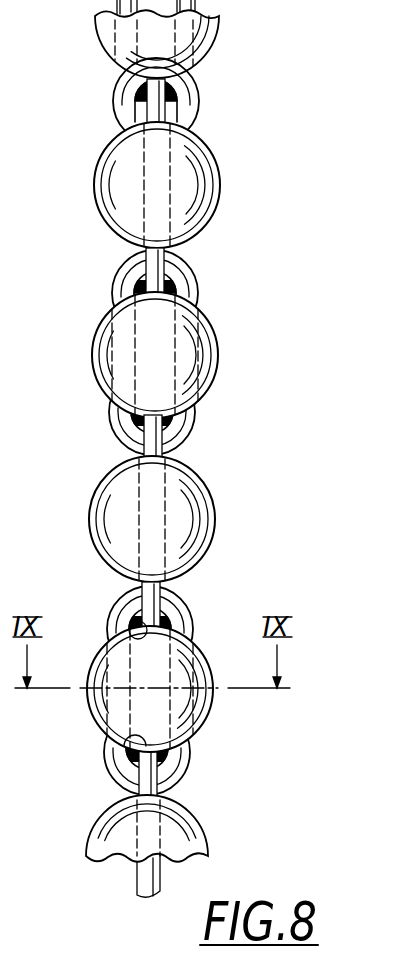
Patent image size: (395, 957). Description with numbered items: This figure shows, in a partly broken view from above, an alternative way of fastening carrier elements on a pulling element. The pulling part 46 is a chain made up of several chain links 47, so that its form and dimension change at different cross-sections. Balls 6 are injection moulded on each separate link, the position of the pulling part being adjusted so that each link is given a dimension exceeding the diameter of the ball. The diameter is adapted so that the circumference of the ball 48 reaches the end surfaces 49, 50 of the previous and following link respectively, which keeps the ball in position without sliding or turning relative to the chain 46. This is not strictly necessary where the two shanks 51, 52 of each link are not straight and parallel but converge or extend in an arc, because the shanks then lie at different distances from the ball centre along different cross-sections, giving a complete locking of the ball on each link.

The ball 6 is at (203, 490).
The pulling part 46 is at (138, 876).
The chain link 47 is at (190, 612).
The circumference of the ball 48 is at (203, 727).
The end surface of the previous link 49 is at (123, 743).
The end surface of the following link 50 is at (130, 627).
The first shank of the link 51 is at (110, 712).
The second shank of the link 52 is at (213, 713).